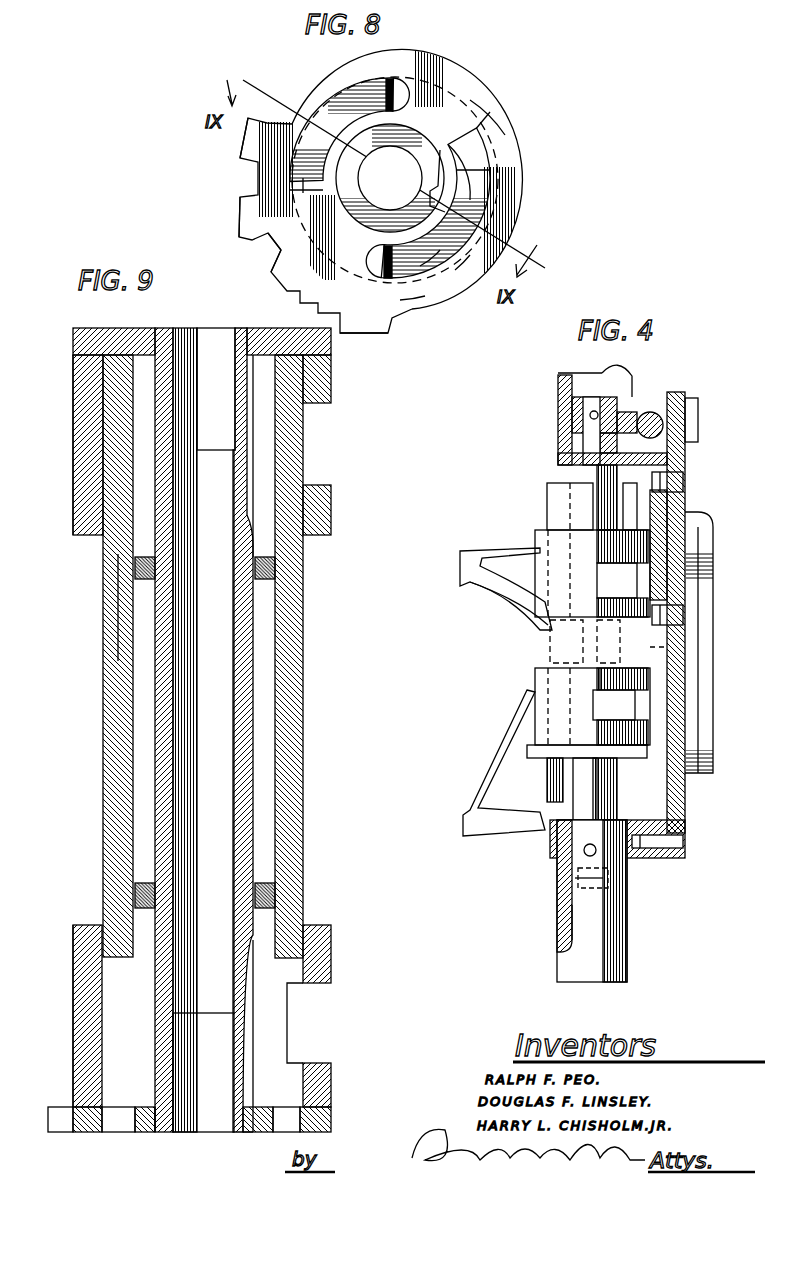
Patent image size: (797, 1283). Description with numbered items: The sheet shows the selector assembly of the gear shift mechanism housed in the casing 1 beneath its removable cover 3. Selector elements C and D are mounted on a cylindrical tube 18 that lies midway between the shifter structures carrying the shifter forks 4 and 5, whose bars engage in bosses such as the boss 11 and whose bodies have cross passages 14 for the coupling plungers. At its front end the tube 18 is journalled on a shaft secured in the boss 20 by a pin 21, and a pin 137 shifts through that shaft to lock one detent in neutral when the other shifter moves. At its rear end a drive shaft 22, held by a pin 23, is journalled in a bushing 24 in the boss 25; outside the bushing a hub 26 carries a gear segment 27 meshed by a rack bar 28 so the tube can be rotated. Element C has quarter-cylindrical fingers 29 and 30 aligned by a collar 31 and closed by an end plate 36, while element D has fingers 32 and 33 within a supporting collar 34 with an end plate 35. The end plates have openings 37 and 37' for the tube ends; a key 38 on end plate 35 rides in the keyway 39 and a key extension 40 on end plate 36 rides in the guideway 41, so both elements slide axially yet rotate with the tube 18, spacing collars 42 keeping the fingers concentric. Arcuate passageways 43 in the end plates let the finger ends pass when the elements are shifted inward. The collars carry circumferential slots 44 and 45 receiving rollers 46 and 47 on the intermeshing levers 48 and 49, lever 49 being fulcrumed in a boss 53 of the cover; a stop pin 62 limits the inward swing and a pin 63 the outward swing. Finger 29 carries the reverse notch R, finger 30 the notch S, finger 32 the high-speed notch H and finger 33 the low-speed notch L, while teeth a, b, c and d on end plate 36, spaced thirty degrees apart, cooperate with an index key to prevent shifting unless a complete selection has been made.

In FIG. 4, the casing 1 is at (640, 858).
In FIG. 4, the cover 3 is at (680, 830).
In FIG. 4, the shifter fork 4 is at (520, 795).
In FIG. 4, the shifter fork 5 is at (470, 562).
In FIG. 4, the boss 11 is at (585, 962).
In FIG. 4, the cross passage 14 is at (580, 880).
In FIG. 8, the cylindrical tube 18 is at (361, 213).
In FIG. 9, the cylindrical tube 18 is at (165, 1120).
In FIG. 4, the cylindrical tube 18 is at (580, 835).
In FIG. 4, the boss 20 is at (583, 852).
In FIG. 4, the pin 21 is at (560, 905).
In FIG. 4, the drive shaft 22 is at (597, 400).
In FIG. 4, the pin 23 is at (560, 480).
In FIG. 4, the bushing 24 is at (565, 445).
In FIG. 4, the boss 25 is at (690, 445).
In FIG. 4, the hub 26 is at (625, 400).
In FIG. 4, the gear segment 27 is at (640, 418).
In FIG. 4, the rack bar 28 is at (660, 425).
In FIG. 8, the finger 29 is at (473, 167).
In FIG. 4, the finger 29 is at (668, 520).
In FIG. 8, the finger 30 is at (303, 190).
In FIG. 4, the finger 30 is at (565, 503).
In FIG. 9, the collar 31 is at (85, 1067).
In FIG. 4, the collar 31 is at (548, 686).
In FIG. 8, the finger 32 is at (352, 102).
In FIG. 9, the finger 32 is at (110, 785).
In FIG. 4, the finger 32 is at (610, 800).
In FIG. 8, the finger 33 is at (428, 265).
In FIG. 9, the finger 33 is at (290, 692).
In FIG. 4, the finger 33 is at (550, 780).
In FIG. 9, the supporting collar 34 is at (90, 504).
In FIG. 4, the supporting collar 34 is at (550, 608).
In FIG. 9, the end plate 35 is at (295, 340).
In FIG. 4, the end plate 35 is at (540, 535).
In FIG. 8, the end plate 36 is at (488, 132).
In FIG. 9, the end plate 36 is at (320, 1125).
In FIG. 4, the end plate 36 is at (655, 790).
In FIG. 9, the opening 37 is at (115, 328).
In FIG. 8, the opening 37' is at (371, 178).
In FIG. 9, the opening 37' is at (147, 1144).
In FIG. 9, the key 38 is at (250, 330).
In FIG. 9, the keyway 39 is at (250, 462).
In FIG. 8, the key extension 40 is at (430, 213).
In FIG. 9, the key extension 40 is at (247, 1110).
In FIG. 9, the guideway 41 is at (250, 1023).
In FIG. 9, the spacing collar 42 is at (145, 567).
In FIG. 8, the arcuate passageway 43 is at (462, 268).
In FIG. 9, the arcuate passageway 43 is at (120, 1122).
In FIG. 9, the slot 44 is at (297, 1045).
In FIG. 4, the slot 44 is at (600, 710).
In FIG. 9, the slot 45 is at (322, 490).
In FIG. 4, the slot 45 is at (605, 580).
In FIG. 4, the roller 46 is at (655, 718).
In FIG. 4, the roller 47 is at (660, 590).
In FIG. 4, the lever 48 is at (700, 665).
In FIG. 4, the lever 49 is at (700, 548).
In FIG. 4, the boss 53 is at (705, 570).
In FIG. 4, the stop pin 62 is at (670, 617).
In FIG. 4, the pin 63 is at (680, 480).
In FIG. 4, the pin 137 is at (575, 880).
In FIG. 8, the selector element C is at (415, 297).
In FIG. 9, the selector element C is at (80, 1018).
In FIG. 4, the selector element C is at (548, 720).
In FIG. 8, the selector element D is at (473, 202).
In FIG. 9, the selector element D is at (73, 418).
In FIG. 4, the selector element D is at (548, 590).
In FIG. 8, the notch H is at (296, 93).
In FIG. 9, the notch H is at (118, 637).
In FIG. 4, the notch H is at (600, 672).
In FIG. 8, the notch L is at (432, 297).
In FIG. 4, the notch L is at (548, 642).
In FIG. 8, the coupling notch R is at (490, 86).
In FIG. 4, the coupling notch R is at (690, 647).
In FIG. 8, the notch S is at (268, 248).
In FIG. 4, the notch S is at (560, 655).
In FIG. 8, the tooth a is at (370, 333).
In FIG. 8, the tooth b is at (284, 288).
In FIG. 8, the tooth c is at (250, 212).
In FIG. 8, the tooth d is at (245, 142).